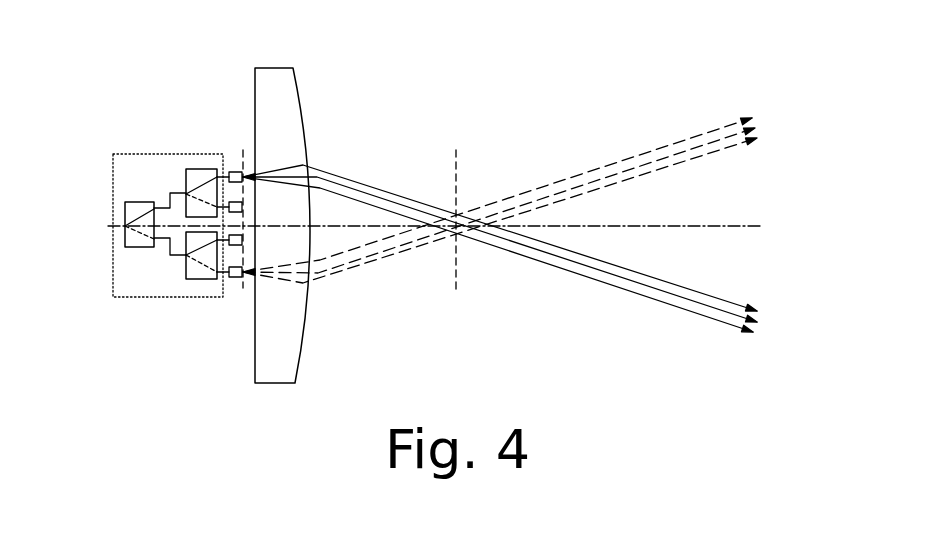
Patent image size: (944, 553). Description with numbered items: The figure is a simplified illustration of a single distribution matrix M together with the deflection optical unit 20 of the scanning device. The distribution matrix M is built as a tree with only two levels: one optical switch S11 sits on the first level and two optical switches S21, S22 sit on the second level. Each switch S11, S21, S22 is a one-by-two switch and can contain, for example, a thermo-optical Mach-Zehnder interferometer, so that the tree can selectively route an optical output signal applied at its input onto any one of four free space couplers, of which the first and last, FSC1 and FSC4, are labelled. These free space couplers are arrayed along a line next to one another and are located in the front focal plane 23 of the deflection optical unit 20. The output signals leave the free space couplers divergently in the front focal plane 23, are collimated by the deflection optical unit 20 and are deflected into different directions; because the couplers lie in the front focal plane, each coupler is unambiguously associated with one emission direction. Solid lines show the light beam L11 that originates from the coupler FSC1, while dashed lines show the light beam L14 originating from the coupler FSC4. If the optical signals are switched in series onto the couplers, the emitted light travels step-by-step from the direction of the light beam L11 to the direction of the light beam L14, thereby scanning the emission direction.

The deflection optical unit 20 is at (268, 373).
The front focal plane 23 is at (249, 152).
The distribution matrix M is at (135, 153).
The optical switch S11 is at (125, 201).
The optical switch S21 is at (186, 177).
The optical switch S22 is at (186, 272).
The free space coupler FSC1 is at (235, 168).
The free space coupler FSC4 is at (233, 281).
The light beam L11 is at (705, 291).
The light beam L14 is at (716, 123).